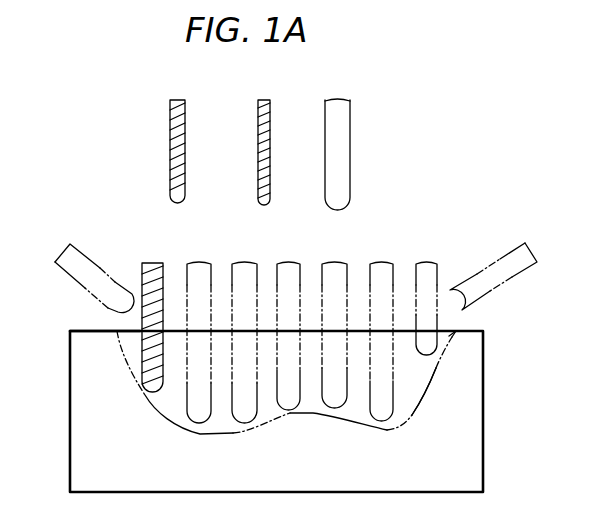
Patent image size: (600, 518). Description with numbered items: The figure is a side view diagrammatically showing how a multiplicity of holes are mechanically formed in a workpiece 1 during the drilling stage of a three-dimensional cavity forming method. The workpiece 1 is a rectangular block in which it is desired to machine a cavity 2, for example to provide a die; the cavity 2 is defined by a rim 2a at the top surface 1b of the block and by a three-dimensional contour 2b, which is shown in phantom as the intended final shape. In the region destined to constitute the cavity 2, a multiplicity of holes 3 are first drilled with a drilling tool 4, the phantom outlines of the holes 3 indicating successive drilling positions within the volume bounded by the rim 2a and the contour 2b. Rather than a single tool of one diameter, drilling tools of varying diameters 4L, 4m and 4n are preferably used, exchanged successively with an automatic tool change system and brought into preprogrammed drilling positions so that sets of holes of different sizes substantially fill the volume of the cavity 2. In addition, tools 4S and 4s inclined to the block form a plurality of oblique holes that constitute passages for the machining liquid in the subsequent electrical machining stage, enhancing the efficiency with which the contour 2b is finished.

The workpiece 1 is at (487, 392).
The top surface of base block 1b is at (117, 331).
The cavity 2 is at (421, 373).
The rim 2a is at (449, 331).
The three-dimensional contour 2b is at (433, 383).
The holes 3 is at (347, 348).
The drilling tool 4 is at (325, 200).
The drilling tool of a second diameter 4m is at (170, 162).
The drilling tool of a third diameter 4n is at (270, 165).
The drilling tool of a first diameter 4L is at (143, 268).
The oblique-hole drilling tool 4S is at (54, 252).
The oblique-hole drilling tool 4s is at (500, 259).